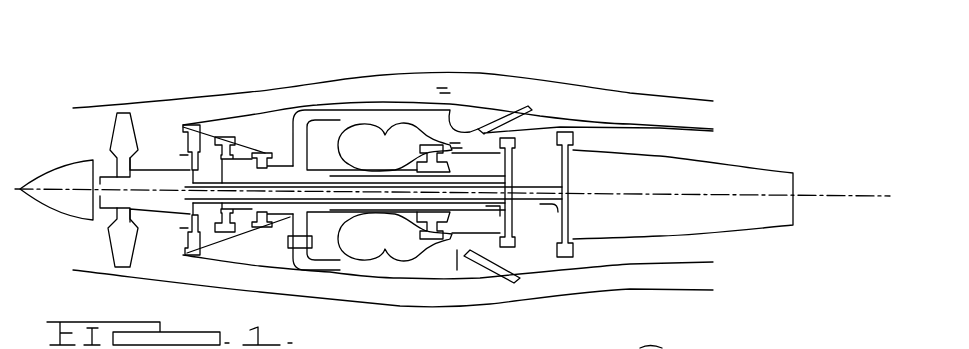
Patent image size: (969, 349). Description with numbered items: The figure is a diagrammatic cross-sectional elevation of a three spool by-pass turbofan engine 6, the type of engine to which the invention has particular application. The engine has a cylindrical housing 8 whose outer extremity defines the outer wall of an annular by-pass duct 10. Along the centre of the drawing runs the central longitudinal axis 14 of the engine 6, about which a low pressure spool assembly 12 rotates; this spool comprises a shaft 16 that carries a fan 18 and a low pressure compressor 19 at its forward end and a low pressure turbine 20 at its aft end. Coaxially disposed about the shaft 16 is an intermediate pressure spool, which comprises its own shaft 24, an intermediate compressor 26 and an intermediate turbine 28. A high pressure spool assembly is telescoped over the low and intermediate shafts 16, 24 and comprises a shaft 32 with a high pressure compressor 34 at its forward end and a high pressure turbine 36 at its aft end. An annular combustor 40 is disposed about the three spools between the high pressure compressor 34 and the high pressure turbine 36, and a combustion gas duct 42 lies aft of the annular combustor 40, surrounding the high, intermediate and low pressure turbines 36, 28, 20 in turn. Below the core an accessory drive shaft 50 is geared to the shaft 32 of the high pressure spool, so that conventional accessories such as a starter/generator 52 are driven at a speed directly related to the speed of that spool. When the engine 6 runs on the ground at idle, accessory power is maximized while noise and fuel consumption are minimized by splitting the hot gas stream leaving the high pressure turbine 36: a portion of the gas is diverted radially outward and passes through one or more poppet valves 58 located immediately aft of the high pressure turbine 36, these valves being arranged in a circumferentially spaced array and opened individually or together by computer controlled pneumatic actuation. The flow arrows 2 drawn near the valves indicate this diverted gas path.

The air flow arrows 2 is at (472, 141).
The three spool by-pass turbofan engine 6 is at (663, 92).
The cylindrical housing 8 is at (702, 97).
The annular by-pass duct 10 is at (390, 94).
The low pressure spool assembly 12 is at (556, 179).
The central longitudinal axis 14 is at (661, 195).
The shaft 16 is at (573, 215).
The fan 18 is at (122, 116).
The low pressure compressor 19 is at (192, 126).
The low pressure turbine 20 is at (566, 134).
The shaft 24 is at (512, 217).
The intermediate compressor 26 is at (225, 137).
The intermediate turbine 28 is at (510, 139).
The shaft 32 is at (333, 208).
The high pressure compressor 34 is at (263, 153).
The high pressure turbine 36 is at (432, 144).
The annular combustor 40 is at (378, 153).
The combustion gas duct 42 is at (402, 243).
The accessory drive shaft 50 is at (280, 230).
The starter/generator 52 is at (285, 250).
The poppet valves 58 is at (450, 125).